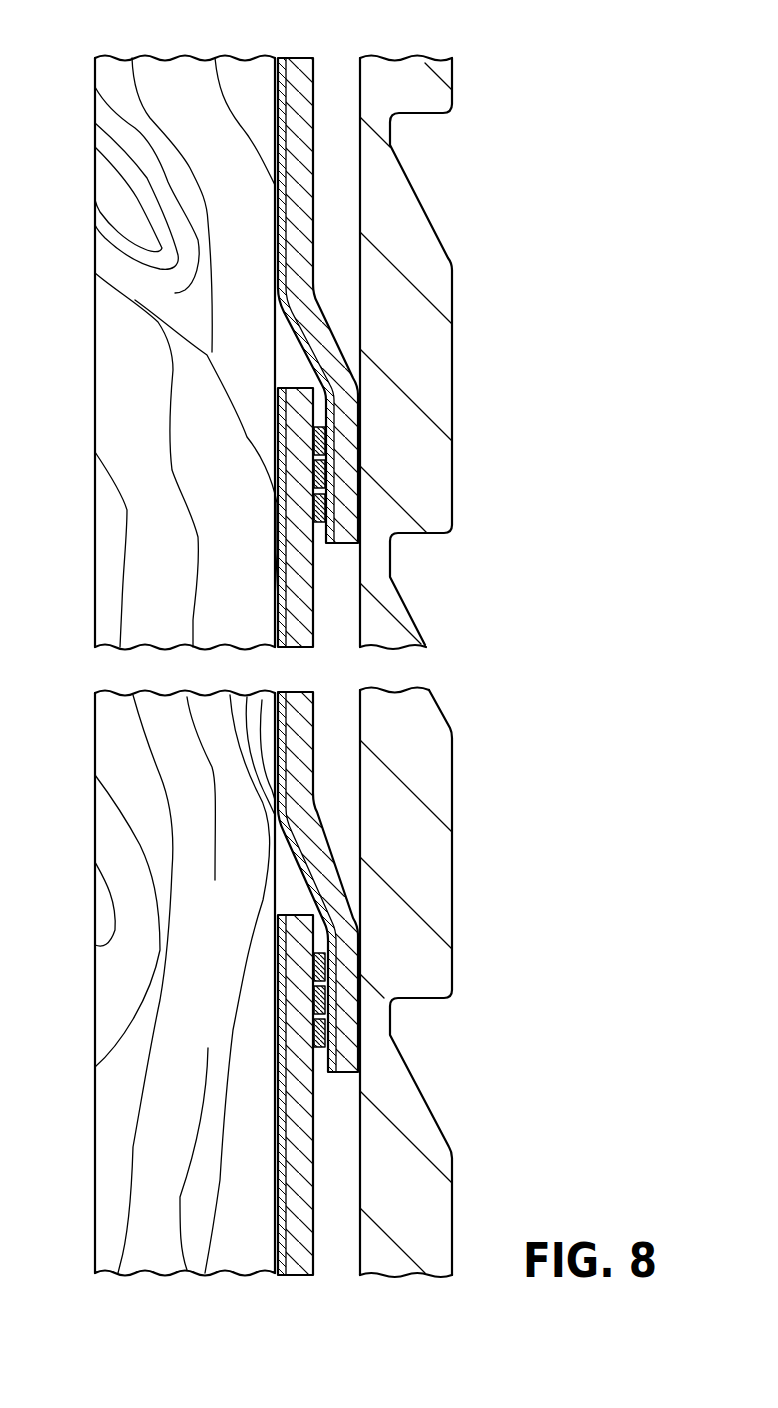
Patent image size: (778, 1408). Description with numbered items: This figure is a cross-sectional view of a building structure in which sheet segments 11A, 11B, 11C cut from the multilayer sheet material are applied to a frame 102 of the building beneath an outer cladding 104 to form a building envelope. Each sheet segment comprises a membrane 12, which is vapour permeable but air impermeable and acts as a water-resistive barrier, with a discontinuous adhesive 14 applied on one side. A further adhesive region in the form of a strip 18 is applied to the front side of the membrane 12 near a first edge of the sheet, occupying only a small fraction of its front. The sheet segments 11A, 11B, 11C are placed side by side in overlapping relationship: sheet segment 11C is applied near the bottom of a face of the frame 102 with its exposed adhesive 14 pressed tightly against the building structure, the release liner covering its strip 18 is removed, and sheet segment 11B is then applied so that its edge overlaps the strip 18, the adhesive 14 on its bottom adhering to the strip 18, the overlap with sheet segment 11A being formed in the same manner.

The sheet segment 11A is at (312, 88).
The sheet segment 11B is at (310, 727).
The sheet segment 11C is at (312, 1220).
The membrane 12 is at (318, 852).
The discontinuous adhesive 14 is at (326, 1075).
The strip 18 is at (317, 522).
The frame 102 is at (118, 1122).
The outer cladding 104 is at (446, 378).